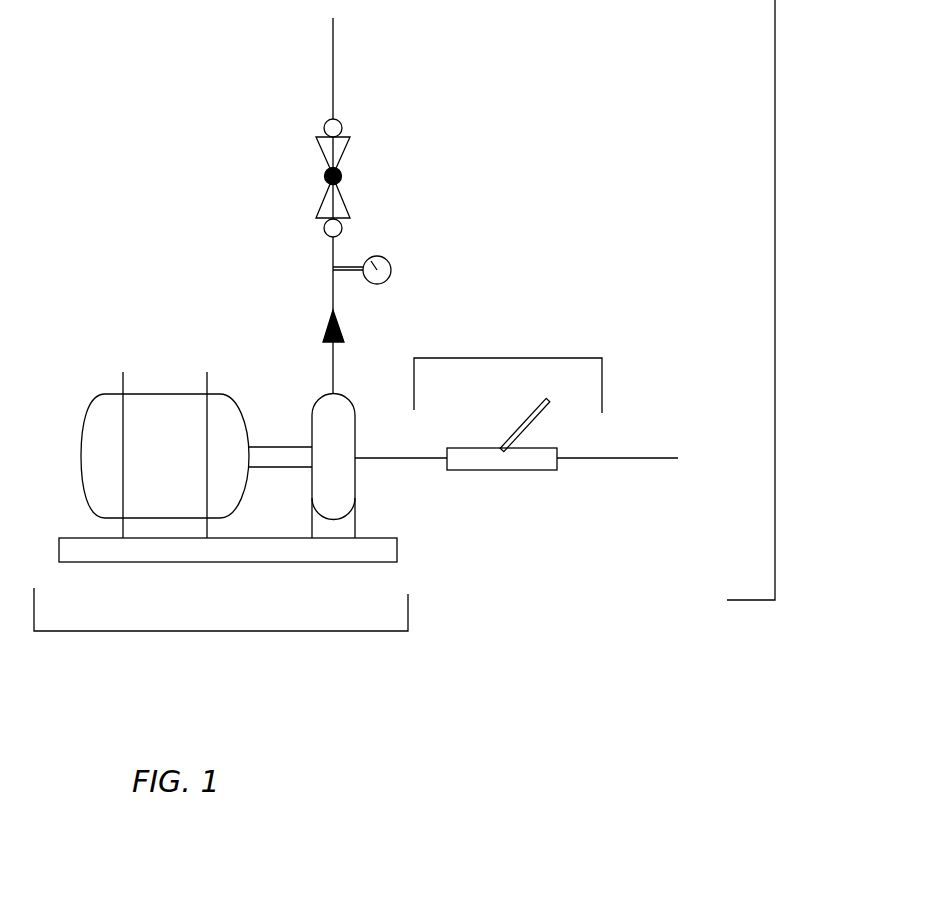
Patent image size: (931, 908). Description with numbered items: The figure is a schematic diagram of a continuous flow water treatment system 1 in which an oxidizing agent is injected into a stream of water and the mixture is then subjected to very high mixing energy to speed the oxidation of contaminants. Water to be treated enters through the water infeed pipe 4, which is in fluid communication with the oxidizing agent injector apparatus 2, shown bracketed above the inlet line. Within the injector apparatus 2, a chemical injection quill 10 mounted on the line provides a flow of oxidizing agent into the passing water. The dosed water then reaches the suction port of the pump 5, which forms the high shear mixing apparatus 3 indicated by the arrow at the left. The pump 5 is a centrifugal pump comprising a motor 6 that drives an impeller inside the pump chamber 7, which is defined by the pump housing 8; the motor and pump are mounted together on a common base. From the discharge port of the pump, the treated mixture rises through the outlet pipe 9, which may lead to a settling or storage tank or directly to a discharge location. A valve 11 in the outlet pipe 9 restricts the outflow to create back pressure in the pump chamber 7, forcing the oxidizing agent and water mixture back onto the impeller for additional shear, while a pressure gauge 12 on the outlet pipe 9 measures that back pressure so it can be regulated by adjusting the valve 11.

The water treatment system 1 is at (775, 252).
The oxidizing agent injector apparatus 2 is at (516, 358).
The high shear mixing apparatus 3 is at (160, 283).
The water infeed pipe 4 is at (640, 458).
The pump 5 is at (214, 631).
The motor 6 is at (196, 455).
The pump chamber 7 is at (333, 466).
The pump housing 8 is at (340, 485).
The outlet pipe 9 is at (333, 367).
The chemical injection quill 10 is at (549, 404).
The valve 11 is at (352, 178).
The pressure gauge 12 is at (391, 270).